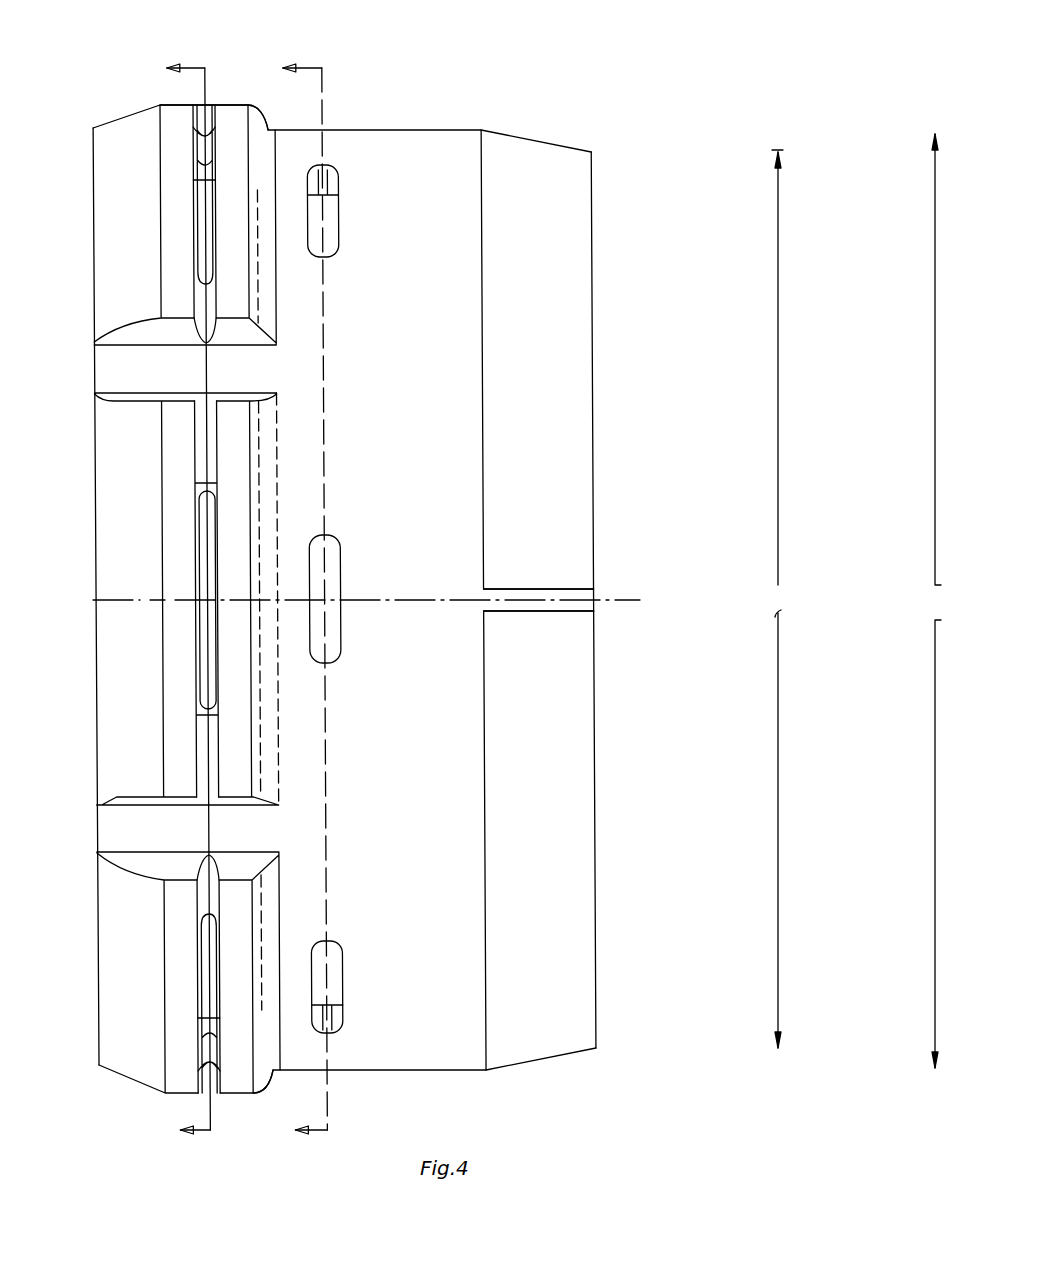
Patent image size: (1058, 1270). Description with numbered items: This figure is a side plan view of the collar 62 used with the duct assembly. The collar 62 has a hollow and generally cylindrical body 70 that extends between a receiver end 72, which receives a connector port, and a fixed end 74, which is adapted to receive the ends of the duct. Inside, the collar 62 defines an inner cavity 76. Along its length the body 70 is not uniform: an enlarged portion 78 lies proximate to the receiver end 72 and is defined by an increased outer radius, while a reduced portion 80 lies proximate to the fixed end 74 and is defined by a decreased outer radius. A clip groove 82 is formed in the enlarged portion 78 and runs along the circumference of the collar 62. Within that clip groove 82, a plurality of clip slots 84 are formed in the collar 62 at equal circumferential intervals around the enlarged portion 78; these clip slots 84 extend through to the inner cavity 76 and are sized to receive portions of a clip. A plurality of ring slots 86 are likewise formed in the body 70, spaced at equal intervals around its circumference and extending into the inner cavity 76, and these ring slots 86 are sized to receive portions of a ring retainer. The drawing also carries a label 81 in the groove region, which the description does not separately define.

The collar 62 is at (452, 124).
The body 70 is at (302, 1052).
The receiver end 72 is at (92, 220).
The fixed end 74 is at (592, 288).
The inner cavity 76 is at (594, 710).
The enlarged portion 78 is at (228, 128).
The reduced portion 80 is at (533, 173).
The groove end recess 81 is at (210, 223).
The clip groove 82 is at (205, 468).
The clip slots 84 is at (198, 552).
The ring slots 86 is at (334, 232).